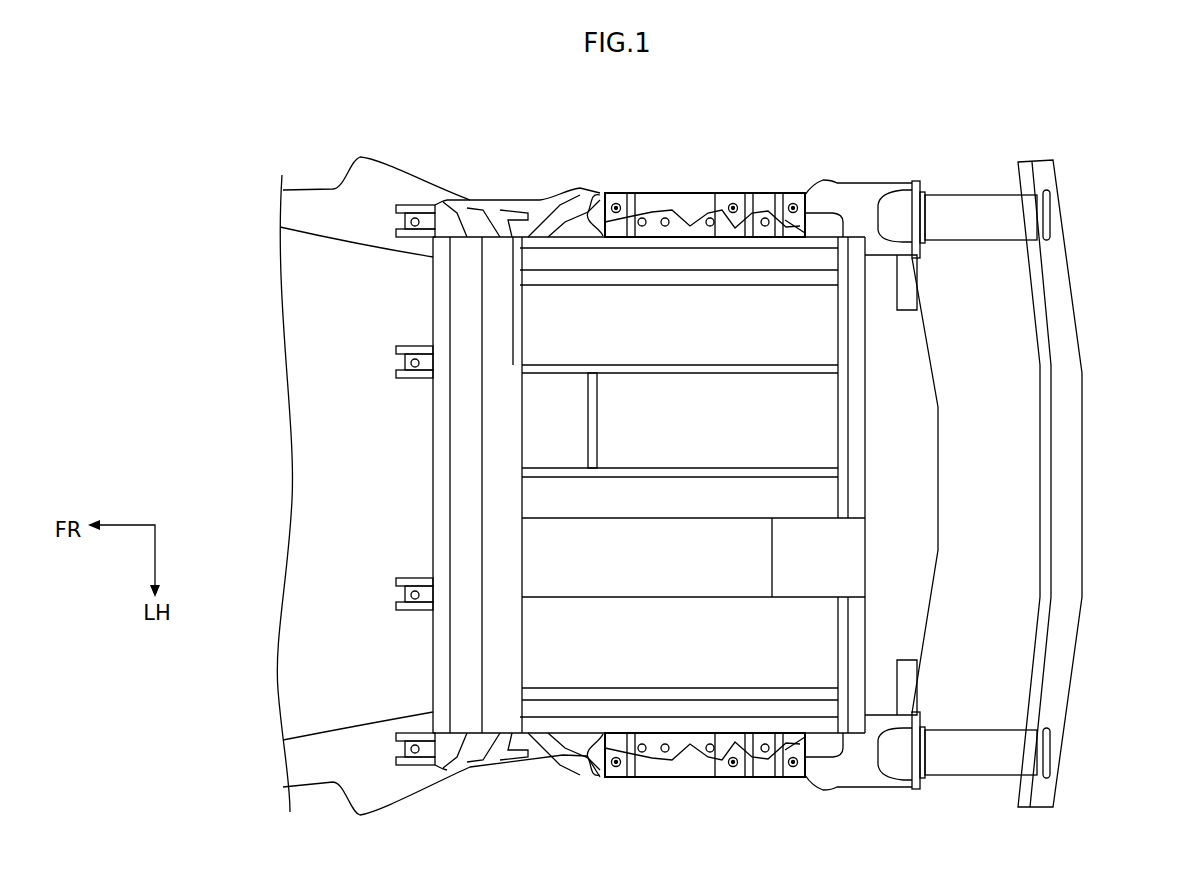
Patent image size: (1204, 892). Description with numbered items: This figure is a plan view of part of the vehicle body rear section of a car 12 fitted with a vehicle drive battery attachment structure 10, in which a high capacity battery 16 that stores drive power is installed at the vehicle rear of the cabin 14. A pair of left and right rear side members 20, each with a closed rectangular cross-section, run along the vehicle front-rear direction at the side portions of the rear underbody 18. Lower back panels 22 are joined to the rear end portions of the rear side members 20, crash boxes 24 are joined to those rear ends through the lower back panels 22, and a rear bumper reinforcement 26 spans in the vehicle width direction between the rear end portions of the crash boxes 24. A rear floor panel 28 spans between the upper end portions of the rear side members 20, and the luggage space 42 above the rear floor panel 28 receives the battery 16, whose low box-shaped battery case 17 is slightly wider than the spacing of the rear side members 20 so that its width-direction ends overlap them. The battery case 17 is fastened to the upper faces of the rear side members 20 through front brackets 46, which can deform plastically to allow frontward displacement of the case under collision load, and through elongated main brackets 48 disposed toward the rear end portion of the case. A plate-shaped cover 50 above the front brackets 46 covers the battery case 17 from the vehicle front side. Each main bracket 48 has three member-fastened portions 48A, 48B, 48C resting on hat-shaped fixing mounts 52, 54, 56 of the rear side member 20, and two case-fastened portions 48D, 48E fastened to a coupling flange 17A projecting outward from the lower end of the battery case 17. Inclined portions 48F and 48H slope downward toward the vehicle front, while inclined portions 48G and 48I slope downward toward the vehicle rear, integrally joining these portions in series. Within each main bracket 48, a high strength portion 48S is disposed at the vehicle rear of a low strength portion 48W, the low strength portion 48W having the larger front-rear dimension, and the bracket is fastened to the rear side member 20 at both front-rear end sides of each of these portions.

The vehicle drive battery attachment structure 10 is at (1125, 281).
The car 12 is at (679, 482).
The cabin 14 is at (432, 486).
The battery 16 is at (865, 470).
The battery case 17 is at (868, 380).
The coupling flange 17A is at (680, 745).
The rear underbody 18 is at (581, 161).
The rear side member 20 is at (549, 775).
The lower back panel 22 is at (915, 790).
The crash box 24 is at (975, 775).
The rear bumper reinforcement 26 is at (1083, 455).
The rear floor panel 28 is at (915, 550).
The luggage space 42 is at (693, 540).
The front bracket 46 is at (480, 752).
The main bracket 48 is at (708, 792).
The member-fastened portion 48A is at (613, 749).
The member-fastened portion 48B is at (729, 742).
The member-fastened portion 48C is at (800, 755).
The case-fastened portion 48D is at (658, 752).
The case-fastened portion 48E is at (763, 742).
The inclined portion 48F is at (632, 744).
The inclined portion 48G is at (700, 744).
The inclined portion 48H is at (749, 746).
The inclined portion 48I is at (782, 750).
The high strength portion 48S is at (765, 786).
The low strength portion 48W is at (662, 786).
The cover 50 is at (462, 477).
The fixing mount 52 is at (602, 775).
The fixing mount 54 is at (746, 775).
The fixing mount 56 is at (820, 775).